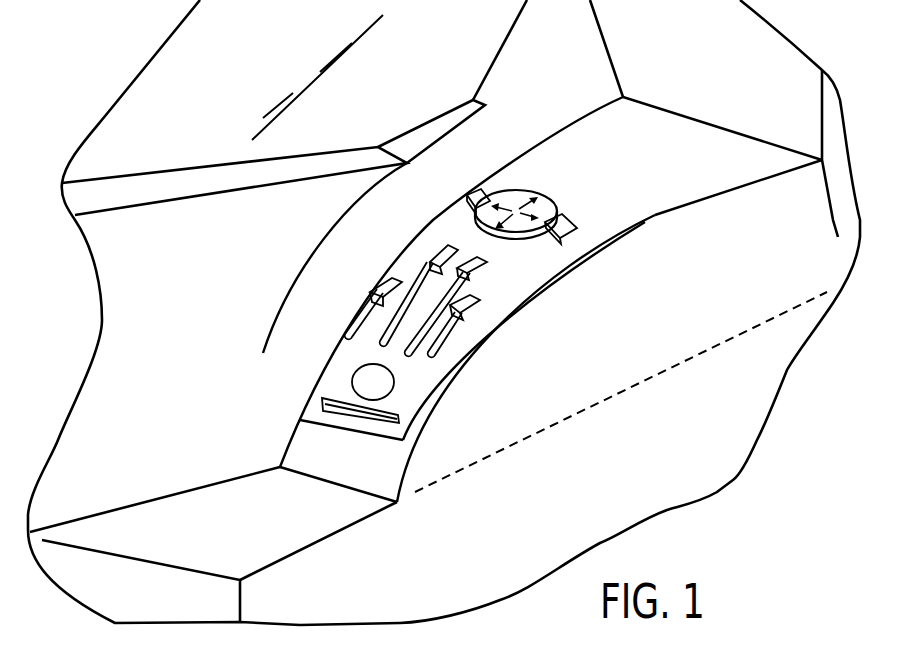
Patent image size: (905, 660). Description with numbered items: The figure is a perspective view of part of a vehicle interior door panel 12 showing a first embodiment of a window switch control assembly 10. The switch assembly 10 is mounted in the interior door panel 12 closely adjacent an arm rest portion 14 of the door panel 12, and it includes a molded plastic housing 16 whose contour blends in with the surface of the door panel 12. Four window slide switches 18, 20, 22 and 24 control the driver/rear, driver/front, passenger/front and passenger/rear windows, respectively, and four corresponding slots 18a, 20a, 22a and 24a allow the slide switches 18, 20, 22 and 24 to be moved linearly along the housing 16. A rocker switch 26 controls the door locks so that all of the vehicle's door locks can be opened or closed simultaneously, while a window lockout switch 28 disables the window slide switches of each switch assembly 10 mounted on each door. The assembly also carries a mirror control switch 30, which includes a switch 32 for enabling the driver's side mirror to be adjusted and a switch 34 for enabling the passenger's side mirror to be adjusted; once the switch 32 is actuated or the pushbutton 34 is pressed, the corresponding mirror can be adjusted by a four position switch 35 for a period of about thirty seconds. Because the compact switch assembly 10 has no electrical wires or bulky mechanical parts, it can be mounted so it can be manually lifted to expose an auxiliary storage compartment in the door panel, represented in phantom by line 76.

The window switch control assembly 10 is at (594, 205).
The interior door panel 12 is at (762, 352).
The arm rest portion 14 is at (307, 537).
The molded plastic housing 16 is at (518, 176).
The window slide switch 18 is at (380, 281).
The slot 18a is at (352, 314).
The window slide switch 20 is at (437, 243).
The slot 20a is at (380, 343).
The window slide switch 22 is at (480, 258).
The slot 22a is at (406, 354).
The window slide switch 24 is at (470, 310).
The slot 24a is at (445, 337).
The rocker switch 26 is at (400, 420).
The window lockout switch 28 is at (394, 380).
The mirror control switch 30 is at (499, 185).
The switch 32 is at (470, 195).
The switch 34 is at (567, 235).
The four position switch 35 is at (548, 198).
The line 76 is at (623, 390).